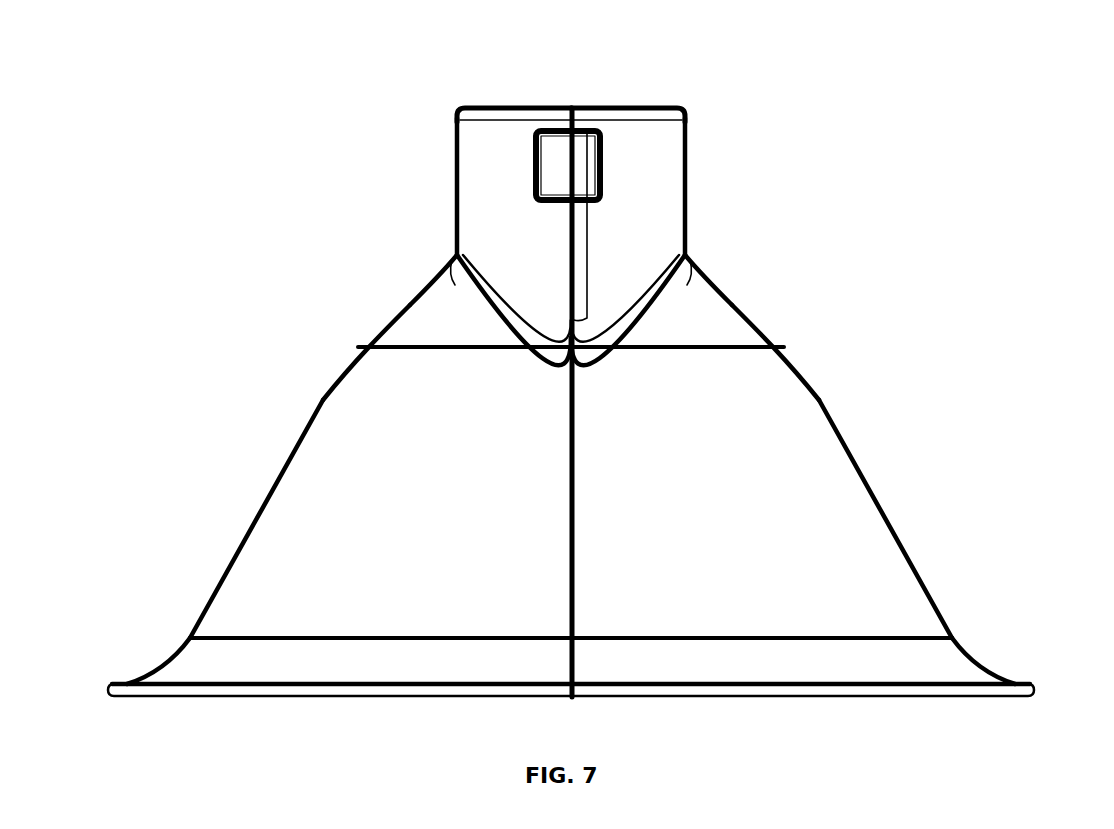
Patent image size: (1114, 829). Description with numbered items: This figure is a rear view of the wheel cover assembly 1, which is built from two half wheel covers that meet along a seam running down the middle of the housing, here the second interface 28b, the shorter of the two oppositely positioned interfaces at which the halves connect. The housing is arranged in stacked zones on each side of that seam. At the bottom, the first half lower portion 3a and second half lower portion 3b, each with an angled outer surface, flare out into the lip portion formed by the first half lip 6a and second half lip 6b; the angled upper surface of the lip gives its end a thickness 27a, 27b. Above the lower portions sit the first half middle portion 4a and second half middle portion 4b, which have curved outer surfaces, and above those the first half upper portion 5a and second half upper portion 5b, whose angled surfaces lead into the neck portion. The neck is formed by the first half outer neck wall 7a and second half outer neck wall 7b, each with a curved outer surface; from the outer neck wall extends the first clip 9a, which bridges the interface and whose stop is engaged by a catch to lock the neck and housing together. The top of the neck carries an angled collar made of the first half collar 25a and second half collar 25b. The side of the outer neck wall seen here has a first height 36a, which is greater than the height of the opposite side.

The wheel cover assembly 1 is at (235, 184).
The first half lower portion 3a is at (792, 436).
The second half lower portion 3b is at (338, 432).
The first half middle portion 4a is at (733, 315).
The second half middle portion 4b is at (407, 318).
The first half upper portion 5a is at (696, 262).
The second half upper portion 5b is at (448, 262).
The first half lip 6a is at (946, 662).
The second half lip 6b is at (188, 662).
The first half outer neck wall 7a is at (655, 178).
The second half outer neck wall 7b is at (476, 170).
The first clip 9a is at (563, 163).
The first half collar 25a is at (640, 107).
The second half collar 25b is at (495, 115).
The thickness of an end of the lip portion 27a is at (1034, 690).
The thickness of an end of the lip portion 27b is at (108, 689).
The second interface 28b is at (573, 588).
The first height 36a is at (588, 211).